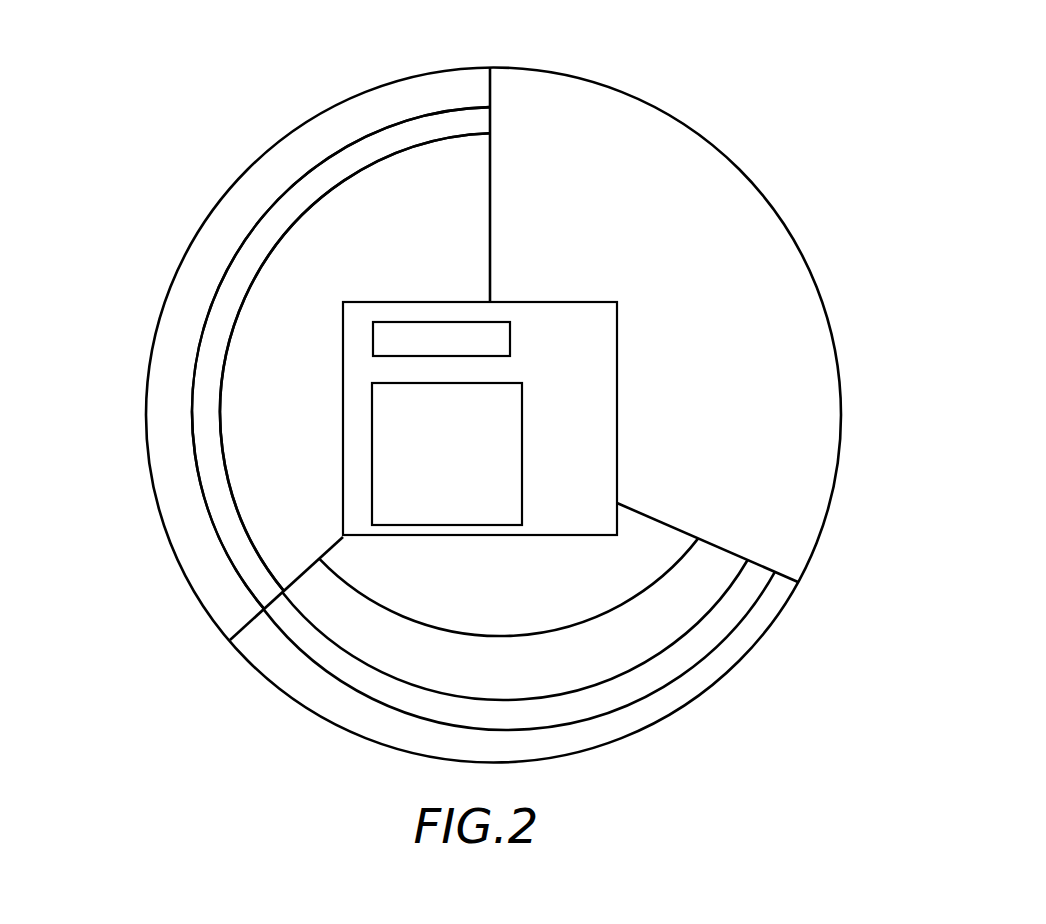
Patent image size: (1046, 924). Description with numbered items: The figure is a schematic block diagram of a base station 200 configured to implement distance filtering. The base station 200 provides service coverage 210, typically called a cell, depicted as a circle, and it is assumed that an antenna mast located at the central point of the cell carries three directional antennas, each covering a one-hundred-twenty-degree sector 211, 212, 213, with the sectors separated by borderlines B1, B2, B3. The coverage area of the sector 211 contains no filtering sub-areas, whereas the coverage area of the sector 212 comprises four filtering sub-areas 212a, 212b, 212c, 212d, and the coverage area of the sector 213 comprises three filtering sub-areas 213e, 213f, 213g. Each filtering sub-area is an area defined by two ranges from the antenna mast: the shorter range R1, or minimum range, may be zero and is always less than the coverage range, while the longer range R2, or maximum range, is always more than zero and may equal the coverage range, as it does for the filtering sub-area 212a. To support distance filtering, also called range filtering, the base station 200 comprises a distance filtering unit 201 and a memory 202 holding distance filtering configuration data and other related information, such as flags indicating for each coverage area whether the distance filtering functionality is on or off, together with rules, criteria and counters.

The base station 200 is at (540, 298).
The distance filtering unit 201 is at (510, 338).
The memory 202 is at (522, 401).
The service coverage 210 is at (808, 261).
The sector 211 is at (858, 360).
The sector 212 is at (752, 684).
The filtering sub-area 212a is at (519, 666).
The filtering sub-area 212b is at (514, 645).
The filtering sub-area 212c is at (508, 609).
The filtering sub-area 212d is at (501, 599).
The sector 213 is at (150, 567).
The filtering sub-area 213e is at (153, 440).
The filtering sub-area 213f is at (232, 521).
The filtering sub-area 213g is at (285, 402).
The shorter range R1 is at (450, 138).
The longer range R2 is at (437, 110).
The borderline B1 is at (490, 216).
The borderline B2 is at (672, 525).
The borderline B3 is at (232, 648).